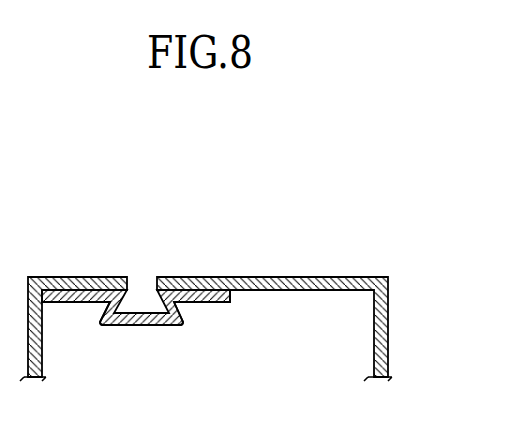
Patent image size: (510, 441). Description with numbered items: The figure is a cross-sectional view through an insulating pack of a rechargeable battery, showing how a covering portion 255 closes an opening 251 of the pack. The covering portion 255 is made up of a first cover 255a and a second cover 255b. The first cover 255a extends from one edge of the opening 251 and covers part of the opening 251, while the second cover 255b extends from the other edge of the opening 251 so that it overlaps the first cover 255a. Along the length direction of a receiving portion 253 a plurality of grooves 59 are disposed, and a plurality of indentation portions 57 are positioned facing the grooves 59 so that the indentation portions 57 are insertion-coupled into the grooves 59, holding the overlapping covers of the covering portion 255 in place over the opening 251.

The indentation portion 57 is at (142, 313).
The groove 59 is at (142, 325).
The opening 251 is at (298, 340).
The receiving portion 253 is at (388, 338).
The covering portion 255 is at (277, 216).
The first cover 255a is at (200, 302).
The second cover 255b is at (257, 277).